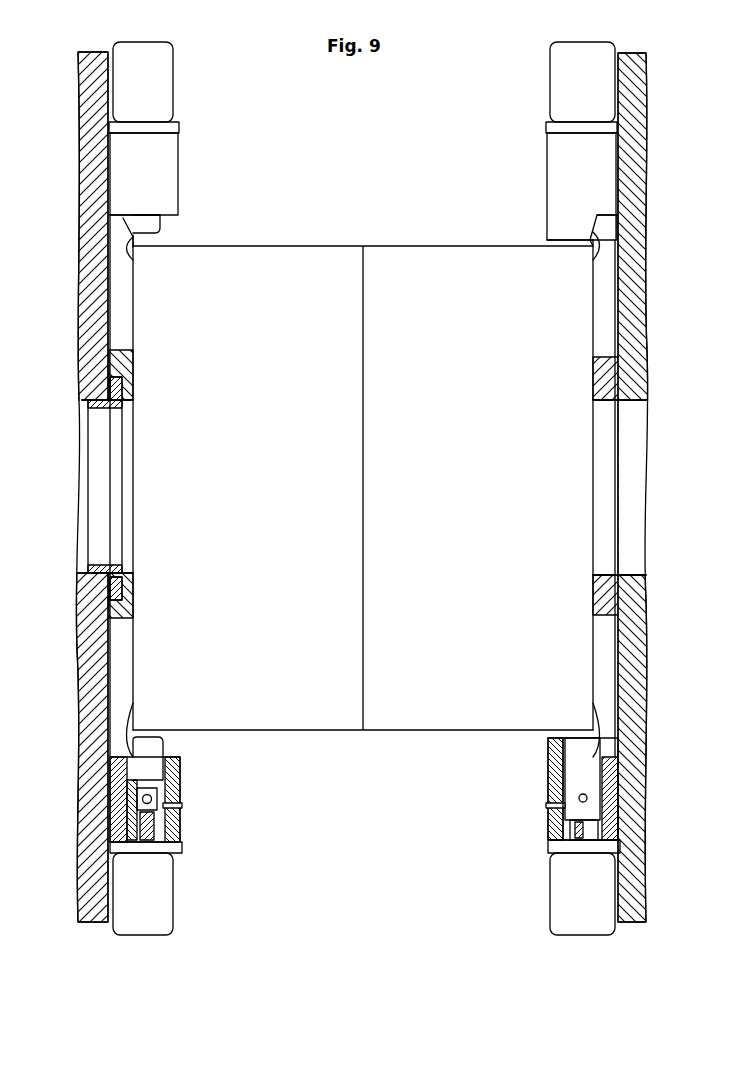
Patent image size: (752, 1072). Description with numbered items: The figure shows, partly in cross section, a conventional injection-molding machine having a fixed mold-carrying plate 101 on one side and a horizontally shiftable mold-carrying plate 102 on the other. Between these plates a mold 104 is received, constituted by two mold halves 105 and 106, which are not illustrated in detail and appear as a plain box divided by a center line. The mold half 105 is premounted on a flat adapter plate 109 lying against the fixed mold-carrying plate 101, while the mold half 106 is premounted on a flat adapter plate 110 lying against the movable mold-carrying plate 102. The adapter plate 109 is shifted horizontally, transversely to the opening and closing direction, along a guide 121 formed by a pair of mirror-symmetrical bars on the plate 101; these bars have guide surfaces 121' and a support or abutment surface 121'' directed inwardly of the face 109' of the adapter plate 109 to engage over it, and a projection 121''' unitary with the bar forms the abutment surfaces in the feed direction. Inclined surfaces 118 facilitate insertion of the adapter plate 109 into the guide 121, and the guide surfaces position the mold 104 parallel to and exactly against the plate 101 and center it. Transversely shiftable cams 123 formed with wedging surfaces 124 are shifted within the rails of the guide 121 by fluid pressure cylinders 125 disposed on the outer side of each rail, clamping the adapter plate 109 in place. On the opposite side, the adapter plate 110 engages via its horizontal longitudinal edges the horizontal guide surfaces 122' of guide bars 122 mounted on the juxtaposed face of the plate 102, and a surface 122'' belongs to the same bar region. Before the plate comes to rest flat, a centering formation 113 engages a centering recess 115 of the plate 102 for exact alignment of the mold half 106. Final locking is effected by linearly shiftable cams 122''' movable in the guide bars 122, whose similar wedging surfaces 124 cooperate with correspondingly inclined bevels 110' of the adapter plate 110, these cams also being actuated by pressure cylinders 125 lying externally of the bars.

The fixed mold-carrying plate 101 is at (630, 336).
The horizontally shiftable mold-carrying plate 102 is at (93, 343).
The mold 104 is at (340, 731).
The mold half 105 is at (440, 700).
The mold half 106 is at (267, 700).
The flat adapter plate 109 is at (585, 498).
The face of the adapter plate 109' is at (578, 494).
The flat adapter plate 110 is at (151, 486).
The inclined bevel 110' is at (161, 493).
The centering formation 113 is at (107, 566).
The centering recess 115 is at (86, 574).
The inclined surface 118 is at (592, 218).
The guide 121 is at (560, 486).
The guide surface 121' is at (557, 207).
The support or abutment surface 121'' is at (564, 256).
The projection 121''' is at (532, 236).
The guide bar 122 is at (171, 487).
The horizontal guide surface 122' is at (183, 215).
The clamping body bevel 122'' is at (180, 232).
The linearly shiftable cam 122''' is at (174, 478).
The transversely shiftable cam 123 is at (568, 755).
The wedging surface 124 is at (155, 748).
The fluid pressure cylinder 125 is at (157, 98).